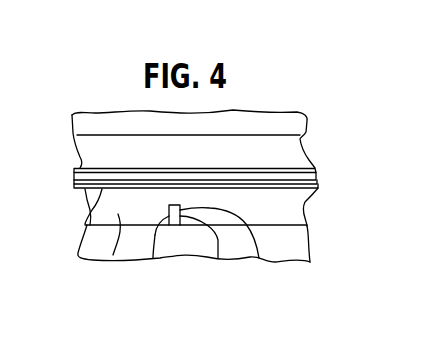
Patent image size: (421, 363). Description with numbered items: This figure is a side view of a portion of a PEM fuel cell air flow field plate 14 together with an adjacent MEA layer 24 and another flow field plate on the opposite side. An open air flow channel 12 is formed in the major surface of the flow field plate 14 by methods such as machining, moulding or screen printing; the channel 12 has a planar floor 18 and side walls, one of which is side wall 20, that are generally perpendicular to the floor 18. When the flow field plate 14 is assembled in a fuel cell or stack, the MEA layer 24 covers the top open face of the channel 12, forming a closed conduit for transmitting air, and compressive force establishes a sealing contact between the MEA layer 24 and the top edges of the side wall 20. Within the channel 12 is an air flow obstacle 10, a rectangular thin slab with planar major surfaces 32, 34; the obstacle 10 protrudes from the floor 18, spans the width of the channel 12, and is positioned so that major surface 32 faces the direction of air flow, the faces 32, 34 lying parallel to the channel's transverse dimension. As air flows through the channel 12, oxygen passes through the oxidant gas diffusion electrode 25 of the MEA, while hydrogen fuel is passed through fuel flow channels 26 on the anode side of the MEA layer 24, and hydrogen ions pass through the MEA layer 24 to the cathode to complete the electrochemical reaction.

The air flow obstacle 10 is at (218, 258).
The open air flow channel 12 is at (113, 255).
The air flow field plate 14 is at (297, 250).
The planar floor 18 is at (290, 220).
The side wall 20 is at (295, 202).
The MEA layer 24 is at (320, 178).
The oxidant gas diffusion electrode 25 is at (93, 208).
The fuel flow channels 26 is at (87, 152).
The planar major surface 32 is at (153, 258).
The planar major surface 34 is at (259, 258).